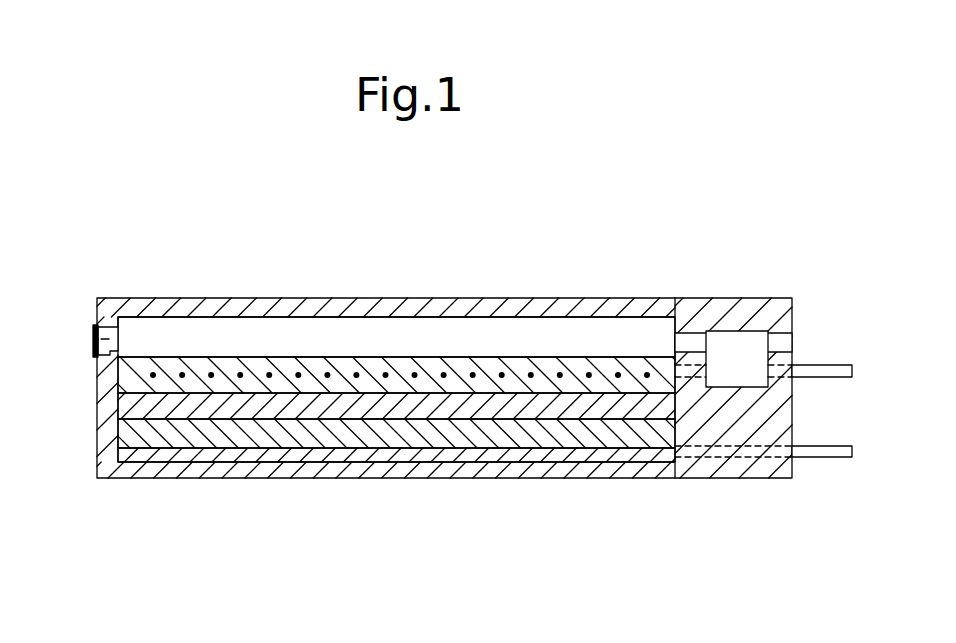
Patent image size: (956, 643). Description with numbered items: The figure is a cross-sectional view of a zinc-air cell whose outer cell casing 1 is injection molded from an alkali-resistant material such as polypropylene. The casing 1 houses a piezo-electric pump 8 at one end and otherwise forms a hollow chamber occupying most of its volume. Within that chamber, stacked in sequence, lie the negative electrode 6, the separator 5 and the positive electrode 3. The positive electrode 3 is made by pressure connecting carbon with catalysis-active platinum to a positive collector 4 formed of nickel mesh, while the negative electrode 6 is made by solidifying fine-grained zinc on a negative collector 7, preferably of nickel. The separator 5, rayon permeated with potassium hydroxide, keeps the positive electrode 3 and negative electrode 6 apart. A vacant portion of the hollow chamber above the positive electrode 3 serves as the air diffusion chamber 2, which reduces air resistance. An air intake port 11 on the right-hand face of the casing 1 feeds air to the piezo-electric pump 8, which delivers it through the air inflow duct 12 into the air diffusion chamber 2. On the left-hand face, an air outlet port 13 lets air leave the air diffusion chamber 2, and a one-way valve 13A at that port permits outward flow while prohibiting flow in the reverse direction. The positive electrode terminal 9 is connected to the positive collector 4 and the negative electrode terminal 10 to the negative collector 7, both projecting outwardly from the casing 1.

The cell casing 1 is at (653, 307).
The air diffusion chamber 2 is at (563, 333).
The positive electrode 3 is at (378, 372).
The positive collector 4 is at (283, 367).
The separator 5 is at (197, 412).
The negative electrode 6 is at (370, 442).
The negative collector 7 is at (482, 450).
The piezo-electric pump 8 is at (776, 313).
The positive electrode terminal 9 is at (821, 372).
The negative electrode terminal 10 is at (813, 453).
The air intake port 11 is at (783, 346).
The air inflow duct 12 is at (733, 297).
The air outlet port 13 is at (110, 338).
The one-way valve 13A is at (95, 338).